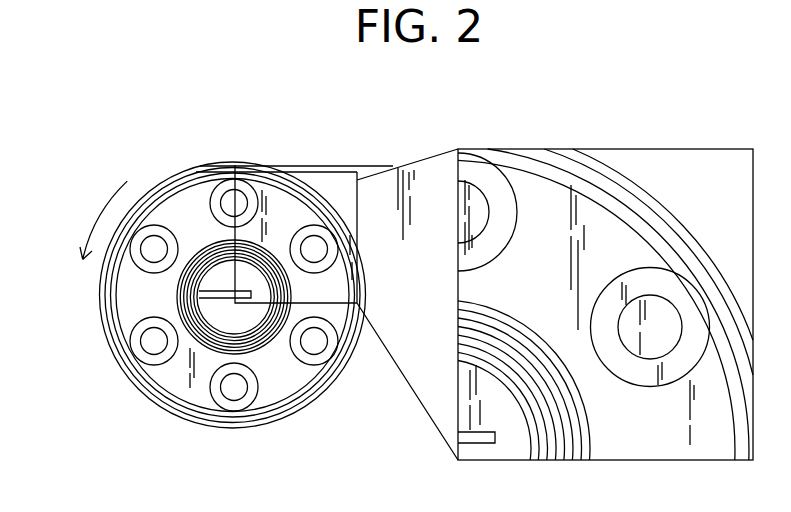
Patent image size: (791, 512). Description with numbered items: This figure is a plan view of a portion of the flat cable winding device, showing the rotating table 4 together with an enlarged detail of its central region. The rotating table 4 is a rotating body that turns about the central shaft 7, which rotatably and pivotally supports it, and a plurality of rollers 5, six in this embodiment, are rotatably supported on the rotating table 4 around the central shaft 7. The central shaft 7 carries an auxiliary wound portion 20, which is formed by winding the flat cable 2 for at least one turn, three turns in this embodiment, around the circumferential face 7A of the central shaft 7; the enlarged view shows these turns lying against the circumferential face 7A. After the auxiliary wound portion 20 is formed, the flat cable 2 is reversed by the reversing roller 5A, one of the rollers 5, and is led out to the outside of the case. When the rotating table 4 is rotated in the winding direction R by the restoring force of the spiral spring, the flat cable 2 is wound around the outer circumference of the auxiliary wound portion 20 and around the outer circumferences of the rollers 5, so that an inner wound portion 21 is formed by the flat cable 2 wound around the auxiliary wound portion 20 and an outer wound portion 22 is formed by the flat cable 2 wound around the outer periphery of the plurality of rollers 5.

The flat cable 2 is at (325, 165).
The rotating table 4 is at (190, 380).
The rollers 5 is at (160, 226).
The reversing roller 5A is at (138, 323).
The central shaft 7 is at (243, 313).
The circumferential face 7A is at (500, 370).
The auxiliary wound portion 20 is at (528, 462).
The inner wound portion 21 is at (590, 411).
The outer wound portion 22 is at (675, 210).
The winding direction R is at (100, 218).